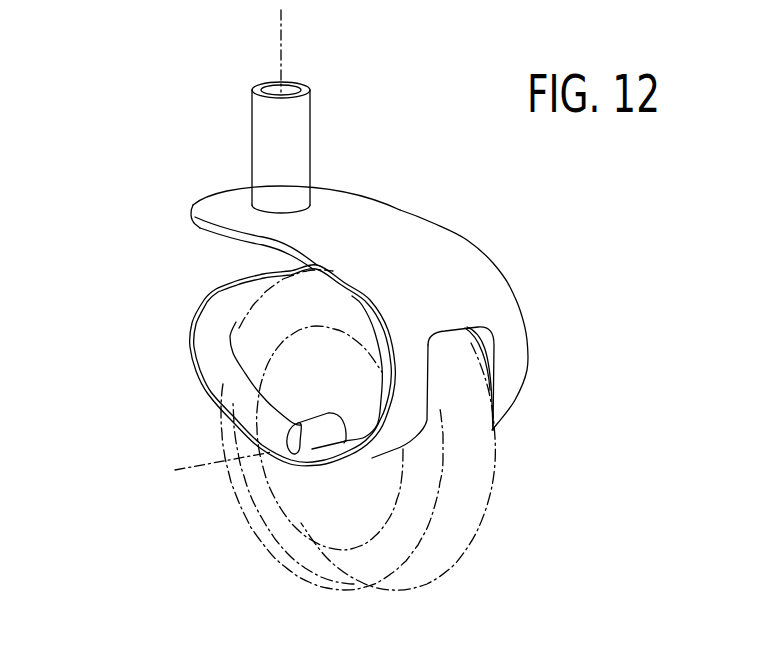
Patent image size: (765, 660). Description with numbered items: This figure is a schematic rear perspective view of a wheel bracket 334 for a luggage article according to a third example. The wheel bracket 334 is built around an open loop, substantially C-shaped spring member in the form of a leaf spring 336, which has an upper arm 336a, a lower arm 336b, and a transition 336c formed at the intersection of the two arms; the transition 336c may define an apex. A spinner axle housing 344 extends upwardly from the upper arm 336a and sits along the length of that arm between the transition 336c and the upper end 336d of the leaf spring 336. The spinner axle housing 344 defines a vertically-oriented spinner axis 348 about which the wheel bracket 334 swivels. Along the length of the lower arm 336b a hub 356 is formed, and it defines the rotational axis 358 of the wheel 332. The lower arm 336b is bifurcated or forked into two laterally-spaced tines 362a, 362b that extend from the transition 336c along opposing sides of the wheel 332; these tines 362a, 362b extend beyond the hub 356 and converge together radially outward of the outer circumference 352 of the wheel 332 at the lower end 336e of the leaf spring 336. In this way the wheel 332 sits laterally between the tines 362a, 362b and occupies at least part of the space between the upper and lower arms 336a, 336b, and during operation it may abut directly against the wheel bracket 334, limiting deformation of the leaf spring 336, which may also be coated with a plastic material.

The wheel bracket 334 is at (425, 215).
The leaf spring 336 is at (455, 272).
The upper arm 336a is at (337, 213).
The lower arm 336b is at (202, 363).
The transition 336c is at (510, 328).
The upper end 336d is at (207, 193).
The lower end 336e is at (206, 296).
The spinner axle housing 344 is at (312, 147).
The spinner axis 348 is at (282, 50).
The outer circumference 352 is at (423, 570).
The wheel 332 is at (477, 463).
The hub 356 is at (316, 433).
The rotational axis 358 is at (187, 473).
The tine 362a is at (525, 383).
The tine 362b is at (248, 397).